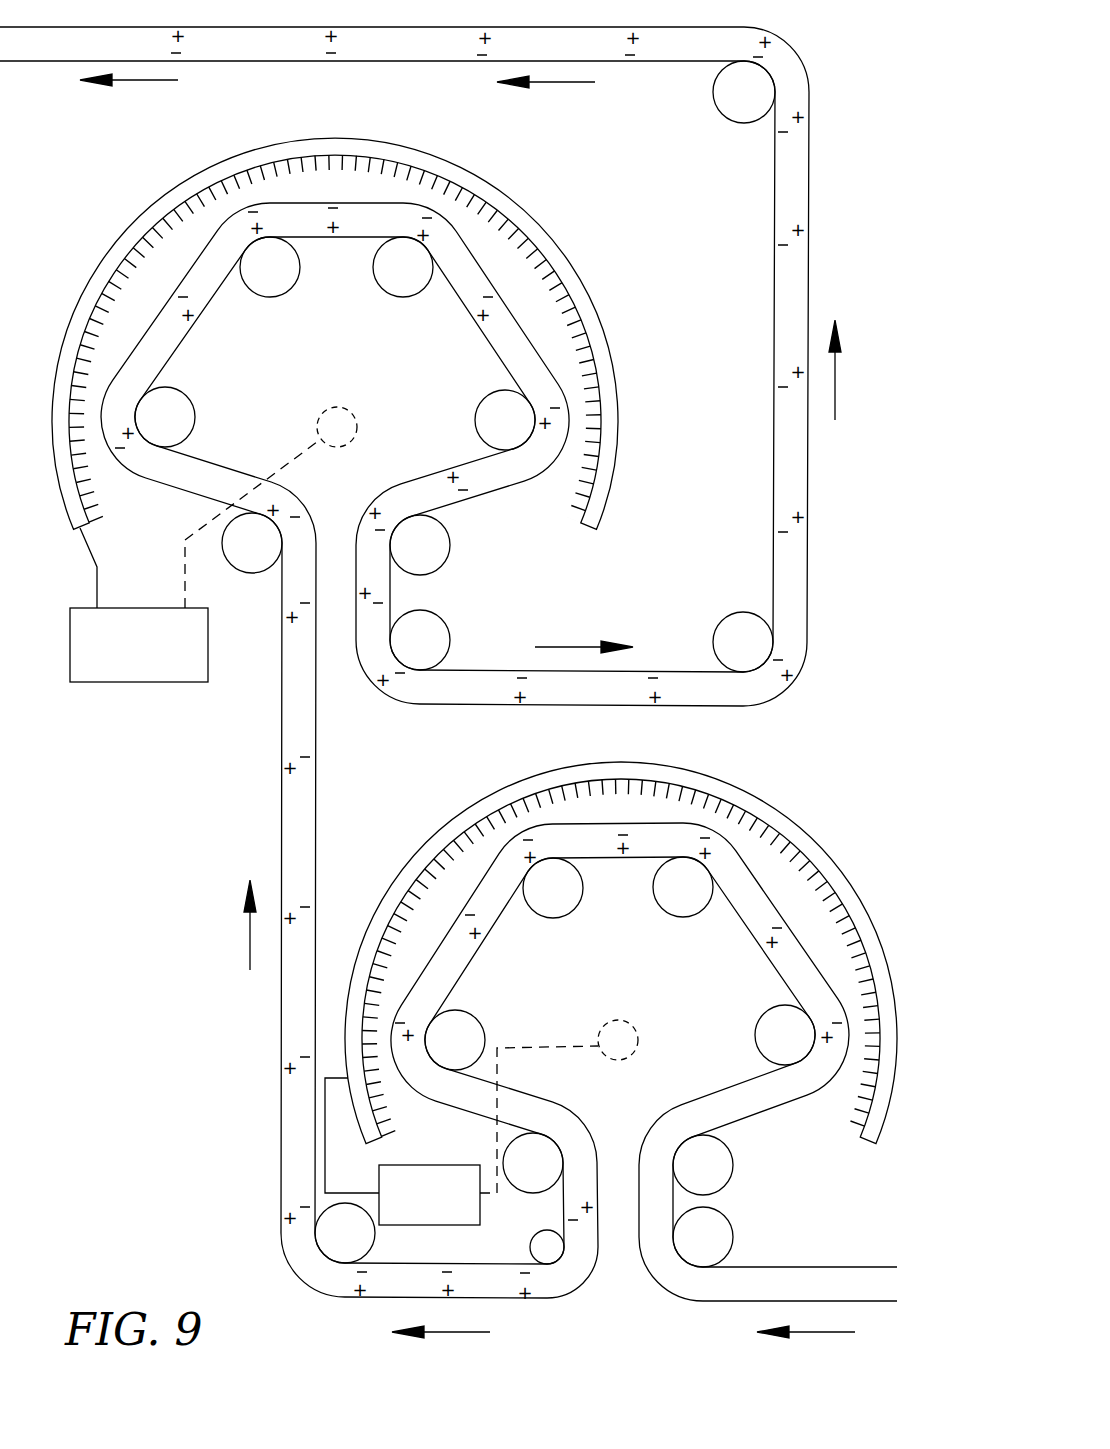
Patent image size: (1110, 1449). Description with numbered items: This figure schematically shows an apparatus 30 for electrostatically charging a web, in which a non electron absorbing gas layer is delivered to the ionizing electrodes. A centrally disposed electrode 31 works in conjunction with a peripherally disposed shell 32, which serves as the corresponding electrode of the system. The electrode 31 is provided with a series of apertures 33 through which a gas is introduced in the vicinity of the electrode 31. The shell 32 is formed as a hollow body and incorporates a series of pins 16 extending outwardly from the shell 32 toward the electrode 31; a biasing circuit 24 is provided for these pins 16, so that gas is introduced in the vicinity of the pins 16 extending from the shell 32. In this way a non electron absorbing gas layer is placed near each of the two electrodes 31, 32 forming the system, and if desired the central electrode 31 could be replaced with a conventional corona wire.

The pins 16 is at (392, 172).
The biasing circuit 24 is at (130, 682).
The apparatus 30 is at (432, 768).
The electrode 31 is at (334, 406).
The shell 32 is at (587, 294).
The apertures 33 is at (368, 426).